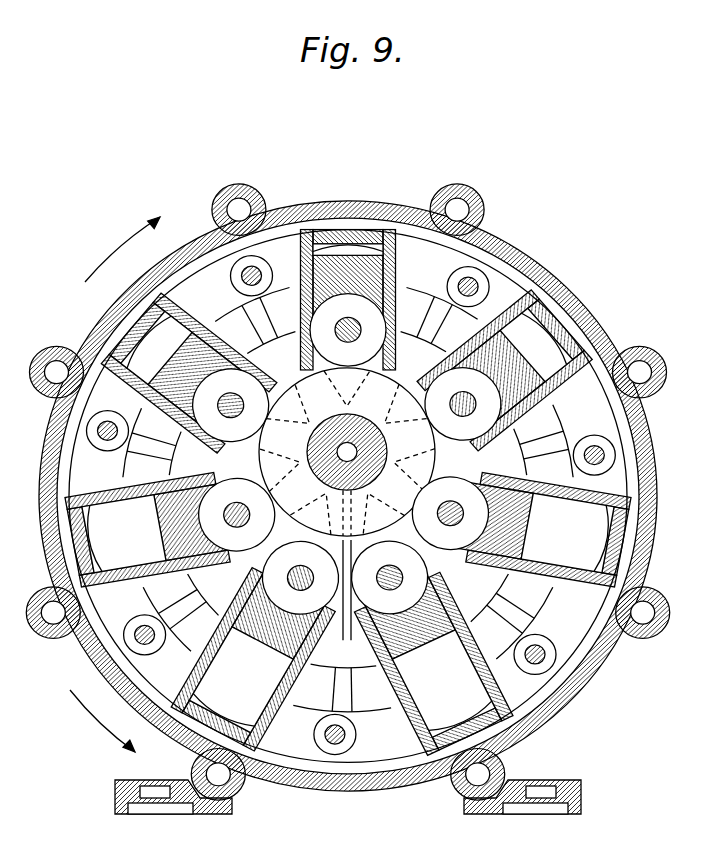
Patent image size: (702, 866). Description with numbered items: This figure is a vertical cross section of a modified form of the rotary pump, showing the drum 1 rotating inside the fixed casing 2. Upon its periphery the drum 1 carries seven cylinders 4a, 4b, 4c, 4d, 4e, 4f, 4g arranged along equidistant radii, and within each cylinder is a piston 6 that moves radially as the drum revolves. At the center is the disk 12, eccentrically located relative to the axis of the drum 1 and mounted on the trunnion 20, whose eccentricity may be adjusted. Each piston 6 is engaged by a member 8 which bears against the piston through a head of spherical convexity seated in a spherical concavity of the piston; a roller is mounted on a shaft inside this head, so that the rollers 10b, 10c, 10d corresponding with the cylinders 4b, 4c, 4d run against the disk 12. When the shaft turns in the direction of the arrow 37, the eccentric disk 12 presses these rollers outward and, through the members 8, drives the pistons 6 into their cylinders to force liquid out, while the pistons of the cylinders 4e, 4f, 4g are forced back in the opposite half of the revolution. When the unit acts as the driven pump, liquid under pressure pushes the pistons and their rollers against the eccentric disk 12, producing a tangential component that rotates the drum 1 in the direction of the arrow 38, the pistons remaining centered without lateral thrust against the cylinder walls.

The drum 1 is at (102, 395).
The fixed casing 2 is at (93, 652).
The cylinder 4a is at (310, 357).
The cylinder 4b is at (260, 432).
The cylinder 4c is at (133, 553).
The cylinder 4d is at (227, 673).
The cylinder 4e is at (428, 691).
The cylinder 4f is at (562, 560).
The cylinder 4g is at (537, 343).
The piston 6 is at (458, 630).
The member 8 is at (346, 640).
The roller 10b is at (258, 404).
The roller 10c is at (261, 500).
The roller 10d is at (318, 572).
The disk 12 is at (412, 389).
The trunnion 20 is at (366, 455).
The arrow 37 is at (122, 244).
The arrow 38 is at (102, 721).